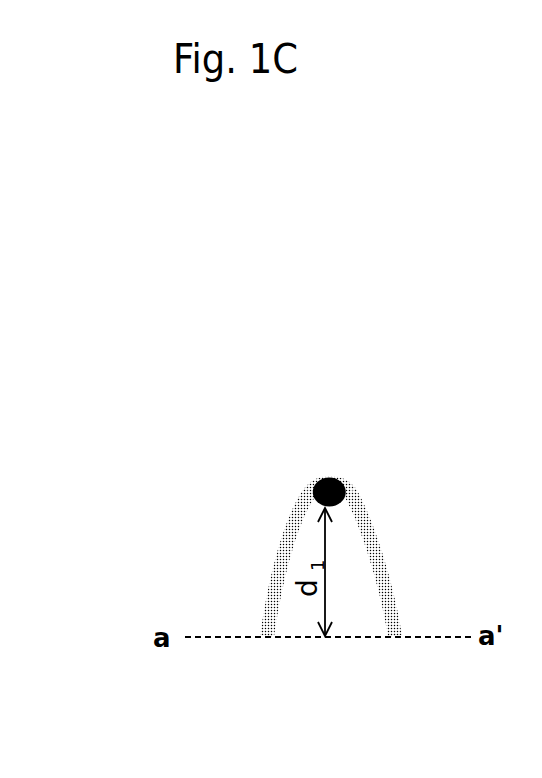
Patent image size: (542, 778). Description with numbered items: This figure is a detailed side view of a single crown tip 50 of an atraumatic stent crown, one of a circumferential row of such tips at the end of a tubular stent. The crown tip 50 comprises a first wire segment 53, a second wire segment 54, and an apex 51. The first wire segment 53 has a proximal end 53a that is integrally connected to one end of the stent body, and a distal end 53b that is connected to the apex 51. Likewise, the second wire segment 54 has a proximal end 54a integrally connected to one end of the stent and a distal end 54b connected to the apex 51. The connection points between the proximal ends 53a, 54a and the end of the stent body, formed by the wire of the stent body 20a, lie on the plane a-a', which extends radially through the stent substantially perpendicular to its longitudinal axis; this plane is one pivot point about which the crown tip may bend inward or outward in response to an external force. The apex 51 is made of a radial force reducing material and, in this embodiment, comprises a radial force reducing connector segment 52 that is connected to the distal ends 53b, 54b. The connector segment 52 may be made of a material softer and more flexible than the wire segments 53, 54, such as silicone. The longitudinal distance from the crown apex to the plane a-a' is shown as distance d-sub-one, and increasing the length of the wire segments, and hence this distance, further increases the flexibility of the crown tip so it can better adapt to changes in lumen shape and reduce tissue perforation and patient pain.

The crown tip 50 is at (333, 288).
The apex 51 is at (301, 447).
The radial force reducing connector segment 52 is at (325, 477).
The first wire segment 53 is at (278, 568).
The proximal end of first wire segment 53a is at (258, 620).
The distal end of first wire segment 53b is at (285, 518).
The second wire segment 54 is at (382, 555).
The proximal end of second wire segment 54a is at (400, 622).
The distal end of second wire segment 54b is at (363, 497).
The wire of the stent body 20a is at (363, 680).